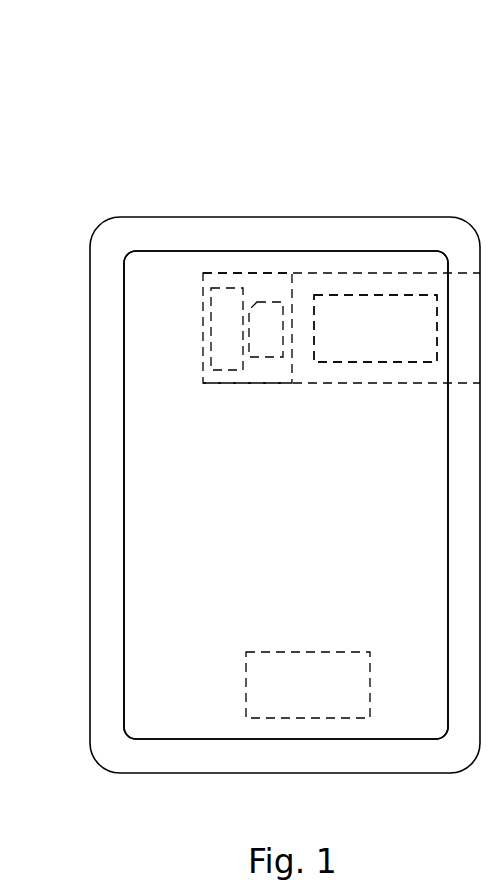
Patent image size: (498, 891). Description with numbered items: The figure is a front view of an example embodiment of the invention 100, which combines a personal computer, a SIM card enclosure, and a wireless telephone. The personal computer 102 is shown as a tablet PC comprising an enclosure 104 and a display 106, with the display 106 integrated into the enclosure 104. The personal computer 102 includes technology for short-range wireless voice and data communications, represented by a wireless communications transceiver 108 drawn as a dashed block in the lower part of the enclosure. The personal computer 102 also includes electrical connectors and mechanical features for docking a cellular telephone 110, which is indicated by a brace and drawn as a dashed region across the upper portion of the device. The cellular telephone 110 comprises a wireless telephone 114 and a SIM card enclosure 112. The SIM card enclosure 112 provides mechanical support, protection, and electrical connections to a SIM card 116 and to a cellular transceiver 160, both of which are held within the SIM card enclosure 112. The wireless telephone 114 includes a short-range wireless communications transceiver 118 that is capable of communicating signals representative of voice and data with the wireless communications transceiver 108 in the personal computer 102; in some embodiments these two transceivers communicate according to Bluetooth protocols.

The embodiment of the invention 100 is at (330, 45).
The personal computer 102 is at (118, 217).
The enclosure 104 is at (100, 508).
The display 106 is at (161, 576).
The wireless communications transceiver 108 is at (302, 652).
The cellular telephone 110 is at (410, 167).
The SIM card enclosure 112 is at (262, 273).
The wireless telephone 114 is at (333, 273).
The SIM card 116 is at (278, 357).
The short-range wireless communications transceiver 118 is at (342, 362).
The cellular transceiver 160 is at (222, 288).